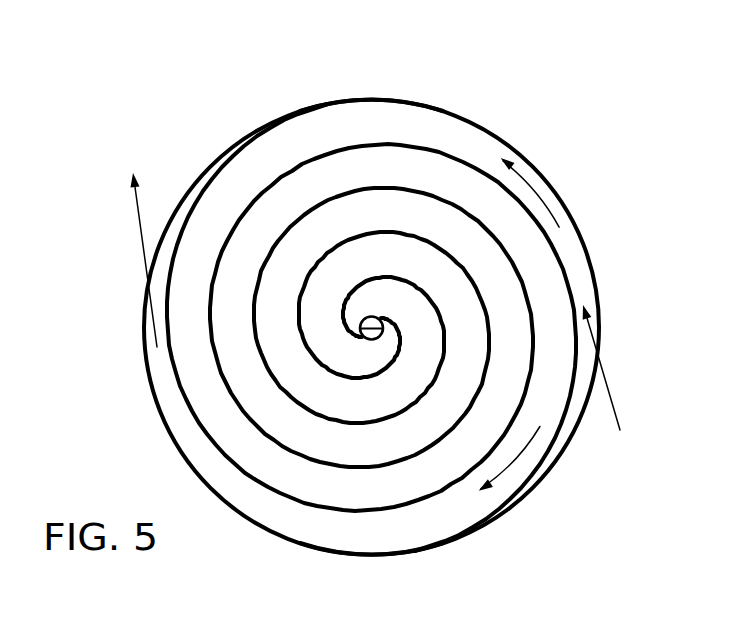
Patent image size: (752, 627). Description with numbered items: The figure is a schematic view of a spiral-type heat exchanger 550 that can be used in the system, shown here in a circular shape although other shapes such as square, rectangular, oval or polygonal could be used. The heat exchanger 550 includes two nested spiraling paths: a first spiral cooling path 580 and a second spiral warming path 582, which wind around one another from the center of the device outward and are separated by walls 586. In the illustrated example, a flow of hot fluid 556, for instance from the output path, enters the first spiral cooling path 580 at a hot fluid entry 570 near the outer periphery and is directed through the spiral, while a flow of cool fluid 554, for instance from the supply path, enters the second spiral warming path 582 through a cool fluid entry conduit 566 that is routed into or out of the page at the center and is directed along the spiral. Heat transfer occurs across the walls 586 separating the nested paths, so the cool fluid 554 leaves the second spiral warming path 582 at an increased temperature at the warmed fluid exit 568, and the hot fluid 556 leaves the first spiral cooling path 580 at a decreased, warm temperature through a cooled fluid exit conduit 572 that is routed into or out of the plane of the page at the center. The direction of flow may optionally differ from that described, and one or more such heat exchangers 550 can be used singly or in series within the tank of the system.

The spiral-type heat exchanger 550 is at (190, 66).
The flow of cool fluid 554 is at (507, 477).
The flow of hot fluid 556 is at (540, 193).
The cool fluid entry conduit 566 is at (374, 345).
The warmed fluid exit 568 is at (137, 213).
The hot fluid entry 570 is at (612, 402).
The cooled fluid exit conduit 572 is at (372, 316).
The first spiral cooling path 580 is at (372, 108).
The second spiral warming path 582 is at (373, 543).
The walls 586 is at (403, 348).